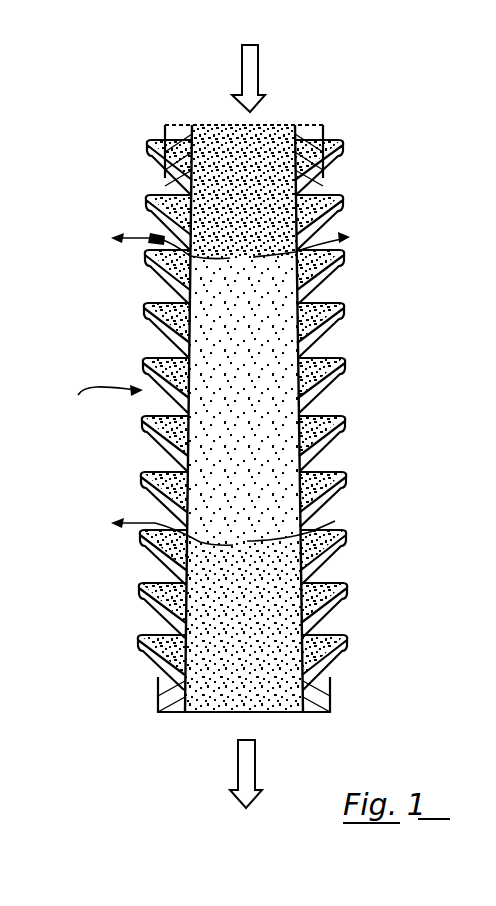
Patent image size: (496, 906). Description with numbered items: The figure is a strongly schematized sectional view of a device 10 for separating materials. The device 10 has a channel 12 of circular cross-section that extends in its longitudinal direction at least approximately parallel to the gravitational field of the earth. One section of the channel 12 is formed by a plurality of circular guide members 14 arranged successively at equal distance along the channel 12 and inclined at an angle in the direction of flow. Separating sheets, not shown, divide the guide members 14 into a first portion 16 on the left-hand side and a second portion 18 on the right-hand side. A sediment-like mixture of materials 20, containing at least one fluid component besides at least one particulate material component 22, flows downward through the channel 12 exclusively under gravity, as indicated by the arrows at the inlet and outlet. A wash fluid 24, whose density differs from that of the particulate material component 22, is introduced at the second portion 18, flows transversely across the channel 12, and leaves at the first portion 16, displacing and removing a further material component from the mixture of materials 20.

The device for separating materials 10 is at (344, 114).
The channel 12 is at (243, 359).
The circular guide members 14 is at (341, 380).
The first portion 16 is at (93, 407).
The second portion 18 is at (352, 437).
The mixture of materials 20 is at (258, 147).
The particulate material component 22 is at (322, 293).
The wash fluid 24 is at (337, 519).